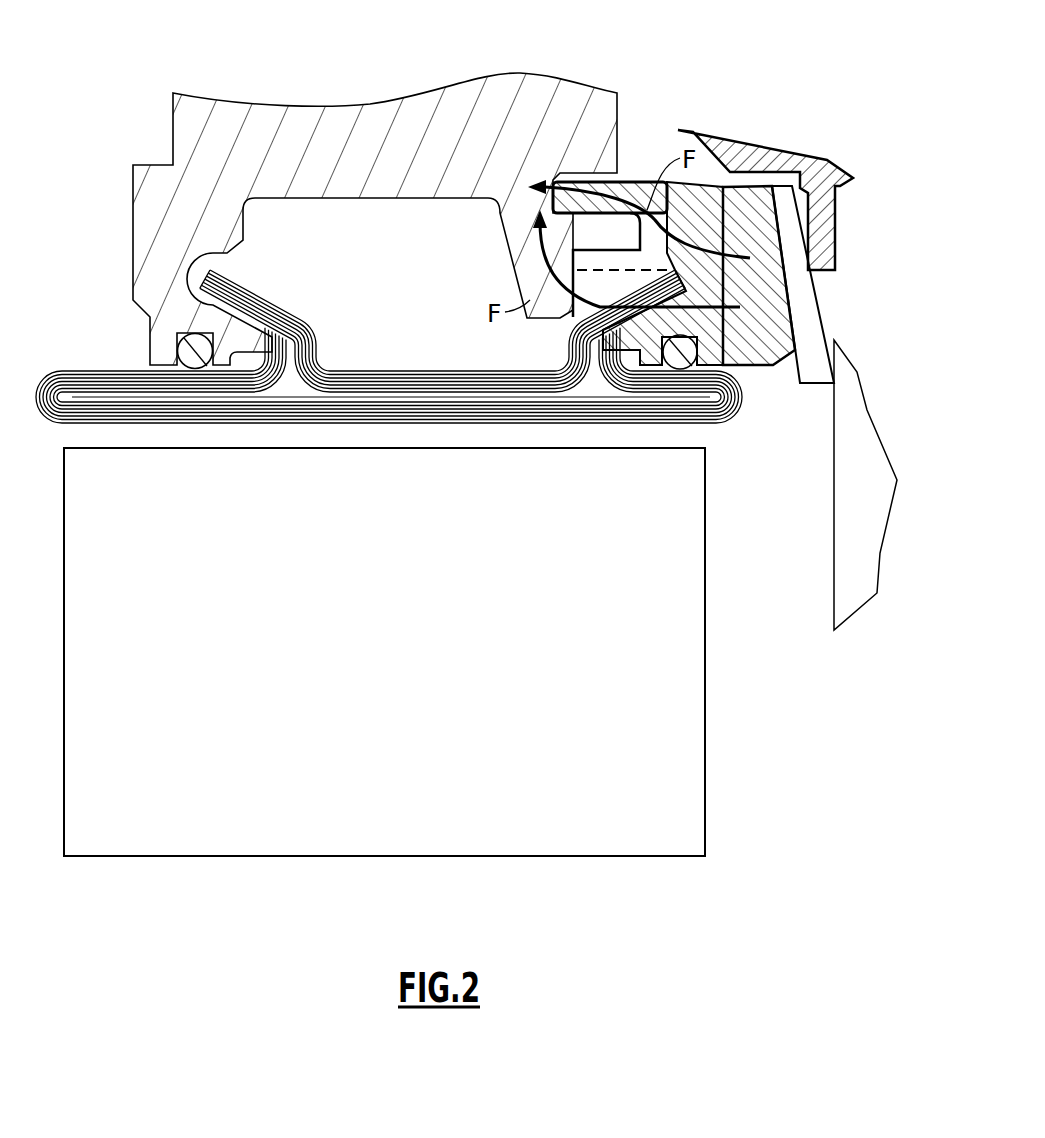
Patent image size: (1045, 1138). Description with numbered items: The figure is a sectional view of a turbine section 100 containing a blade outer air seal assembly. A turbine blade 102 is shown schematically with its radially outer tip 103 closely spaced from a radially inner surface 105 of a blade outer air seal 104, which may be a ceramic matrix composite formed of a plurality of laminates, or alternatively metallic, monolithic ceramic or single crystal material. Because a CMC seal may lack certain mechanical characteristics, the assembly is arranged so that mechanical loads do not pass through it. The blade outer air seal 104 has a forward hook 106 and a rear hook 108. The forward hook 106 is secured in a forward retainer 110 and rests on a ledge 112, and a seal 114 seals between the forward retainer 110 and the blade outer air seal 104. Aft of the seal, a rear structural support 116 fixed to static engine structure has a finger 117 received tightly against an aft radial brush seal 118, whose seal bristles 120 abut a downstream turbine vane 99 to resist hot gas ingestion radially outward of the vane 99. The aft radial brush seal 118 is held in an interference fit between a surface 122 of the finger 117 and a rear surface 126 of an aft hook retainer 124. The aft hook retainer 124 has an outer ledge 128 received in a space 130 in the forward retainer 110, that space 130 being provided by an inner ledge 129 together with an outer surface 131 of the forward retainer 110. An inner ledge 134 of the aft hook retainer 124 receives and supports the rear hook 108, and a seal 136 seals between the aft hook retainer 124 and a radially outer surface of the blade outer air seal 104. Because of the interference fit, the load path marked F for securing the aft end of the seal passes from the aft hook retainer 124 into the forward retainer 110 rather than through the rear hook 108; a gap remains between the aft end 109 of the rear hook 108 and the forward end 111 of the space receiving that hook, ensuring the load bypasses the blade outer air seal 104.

The downstream turbine vane 99 is at (852, 507).
The turbine section 100 is at (860, 332).
The turbine blade 102 is at (131, 838).
The radially outer tip 103 is at (102, 448).
The blade outer air seal 104 is at (52, 422).
The radially inner surface 105 is at (233, 427).
The forward hook 106 is at (268, 318).
The rear hook 108 is at (580, 320).
The aft end 109 is at (683, 253).
The forward retainer 110 is at (197, 143).
The forward end 111 is at (683, 283).
The ledge 112 is at (217, 333).
The seal 114 is at (187, 352).
The rear structural support 116 is at (847, 170).
The finger 117 is at (822, 252).
The aft radial brush seal 118 is at (763, 337).
The seal bristles 120 is at (814, 384).
The surface 122 is at (800, 170).
The aft hook retainer 124 is at (655, 187).
The rear surface 126 is at (737, 260).
The outer ledge 128 is at (583, 182).
The inner ledge 129 is at (583, 233).
The space 130 is at (527, 207).
The outer surface 131 is at (557, 137).
The inner ledge 134 is at (637, 340).
The seal 136 is at (673, 365).